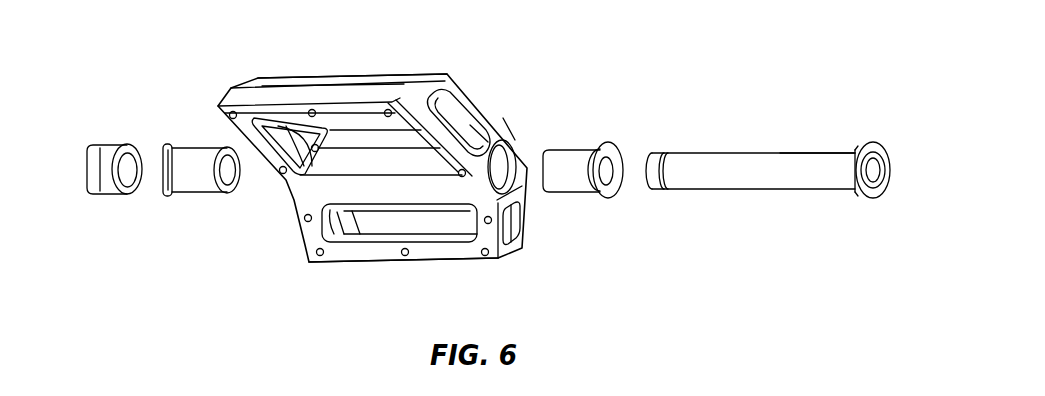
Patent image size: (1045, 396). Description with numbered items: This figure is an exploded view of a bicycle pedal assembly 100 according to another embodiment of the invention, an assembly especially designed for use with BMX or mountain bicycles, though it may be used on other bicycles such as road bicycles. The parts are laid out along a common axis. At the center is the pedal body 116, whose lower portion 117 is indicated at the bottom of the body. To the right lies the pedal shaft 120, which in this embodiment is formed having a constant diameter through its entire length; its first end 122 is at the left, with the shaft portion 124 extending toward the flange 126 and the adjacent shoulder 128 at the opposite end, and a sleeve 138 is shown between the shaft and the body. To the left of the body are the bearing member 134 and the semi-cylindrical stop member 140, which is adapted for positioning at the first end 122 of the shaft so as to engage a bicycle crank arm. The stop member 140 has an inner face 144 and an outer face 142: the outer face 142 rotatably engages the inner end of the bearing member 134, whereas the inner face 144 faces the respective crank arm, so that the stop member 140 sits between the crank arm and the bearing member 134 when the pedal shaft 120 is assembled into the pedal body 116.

The bicycle pedal assembly 100 is at (547, 41).
The pedal body 116 is at (414, 100).
The pedal body bottom portion 117 is at (307, 254).
The pedal shaft 120 is at (731, 165).
The first end 122 is at (658, 163).
The axle shaft portion 124 is at (813, 153).
The axle flange 126 is at (894, 161).
The axle flange shoulder 128 is at (857, 177).
The bearing member 134 is at (207, 185).
The sleeve 138 is at (572, 160).
The stop member 140 is at (106, 191).
The outer face 142 is at (131, 189).
The inner face 144 is at (86, 168).